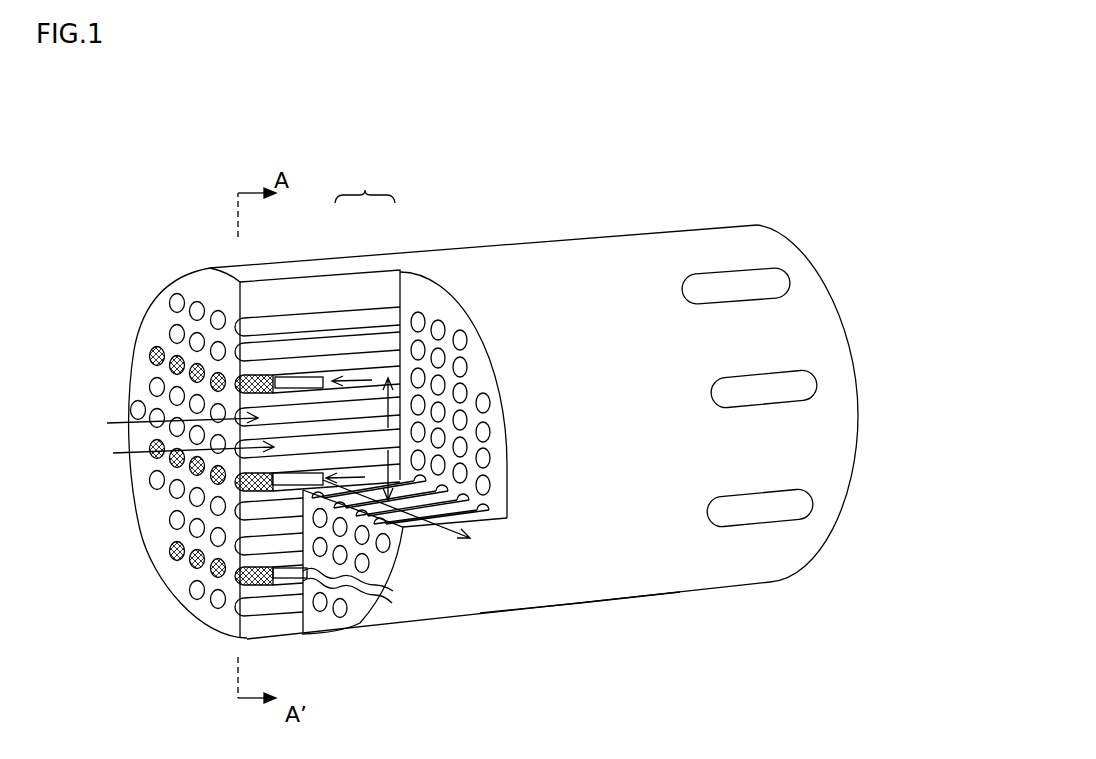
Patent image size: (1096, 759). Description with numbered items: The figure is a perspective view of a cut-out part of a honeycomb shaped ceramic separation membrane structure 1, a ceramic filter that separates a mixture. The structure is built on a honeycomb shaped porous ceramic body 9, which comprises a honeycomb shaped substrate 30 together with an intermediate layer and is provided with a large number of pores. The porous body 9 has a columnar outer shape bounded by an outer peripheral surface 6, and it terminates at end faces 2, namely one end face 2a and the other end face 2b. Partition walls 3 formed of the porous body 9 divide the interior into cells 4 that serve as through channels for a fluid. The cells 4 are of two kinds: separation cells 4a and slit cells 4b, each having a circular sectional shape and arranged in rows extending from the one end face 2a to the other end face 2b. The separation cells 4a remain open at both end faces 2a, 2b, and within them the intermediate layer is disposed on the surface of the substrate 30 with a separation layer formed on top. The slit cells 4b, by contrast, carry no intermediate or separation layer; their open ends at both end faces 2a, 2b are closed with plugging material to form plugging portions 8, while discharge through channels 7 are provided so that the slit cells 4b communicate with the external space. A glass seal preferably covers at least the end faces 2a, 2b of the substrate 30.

The honeycomb shaped ceramic separation membrane structure 1 is at (620, 108).
The end face 2 is at (488, 431).
The one end face 2a is at (133, 389).
The other end face 2b is at (827, 547).
The partition walls 3 is at (268, 340).
The cells 4 is at (319, 392).
The separation cells 4a is at (353, 322).
The slit cells 4b is at (384, 376).
The outer peripheral surface 6 is at (610, 590).
The discharge through channels 7 is at (302, 385).
The plugging portions 8 is at (233, 386).
The honeycomb shaped porous ceramic body 9 is at (512, 258).
The substrate 30 is at (531, 580).